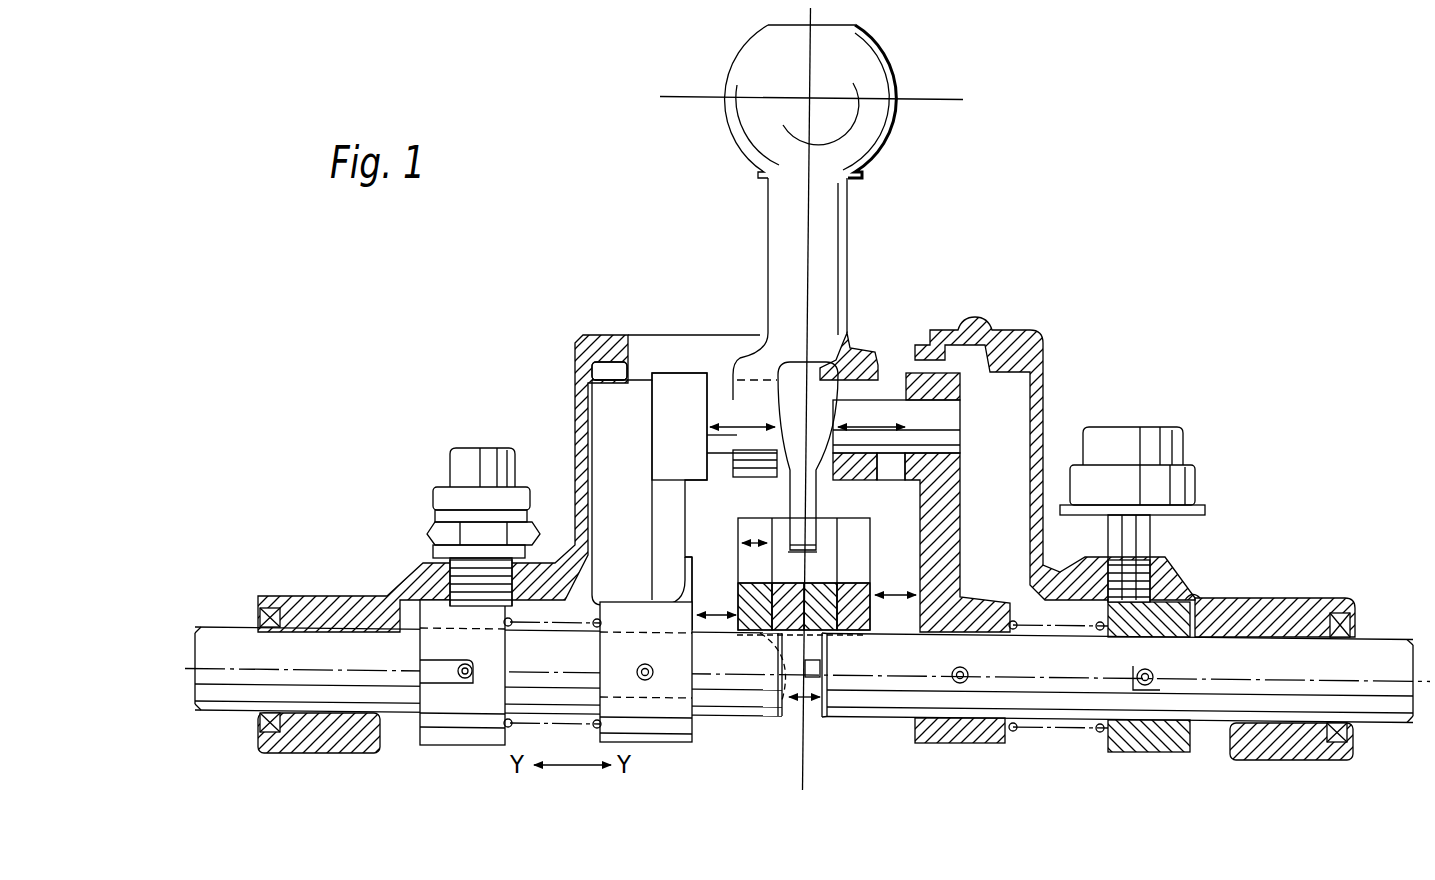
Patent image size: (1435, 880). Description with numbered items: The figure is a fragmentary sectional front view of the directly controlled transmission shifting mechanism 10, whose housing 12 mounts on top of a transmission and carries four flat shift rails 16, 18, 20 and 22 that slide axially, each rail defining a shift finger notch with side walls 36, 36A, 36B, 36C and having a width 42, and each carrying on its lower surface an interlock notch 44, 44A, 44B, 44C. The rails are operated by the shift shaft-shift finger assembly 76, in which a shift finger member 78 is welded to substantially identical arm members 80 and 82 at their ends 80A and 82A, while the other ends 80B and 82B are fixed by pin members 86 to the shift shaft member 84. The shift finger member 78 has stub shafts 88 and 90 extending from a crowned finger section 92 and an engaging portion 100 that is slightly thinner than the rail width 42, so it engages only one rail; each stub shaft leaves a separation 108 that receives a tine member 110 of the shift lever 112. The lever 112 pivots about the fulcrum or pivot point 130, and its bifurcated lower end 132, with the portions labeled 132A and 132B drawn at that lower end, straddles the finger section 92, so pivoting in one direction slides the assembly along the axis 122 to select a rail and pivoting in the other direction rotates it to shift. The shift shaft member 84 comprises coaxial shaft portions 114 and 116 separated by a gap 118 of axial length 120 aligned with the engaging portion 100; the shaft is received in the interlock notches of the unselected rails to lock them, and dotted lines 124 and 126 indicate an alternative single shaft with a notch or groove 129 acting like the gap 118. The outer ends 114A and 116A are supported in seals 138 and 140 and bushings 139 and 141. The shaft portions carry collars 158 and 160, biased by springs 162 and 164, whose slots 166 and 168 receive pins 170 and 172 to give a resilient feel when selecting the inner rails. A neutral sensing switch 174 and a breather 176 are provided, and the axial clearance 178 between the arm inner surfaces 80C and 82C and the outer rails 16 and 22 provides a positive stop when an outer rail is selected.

The transmission shifting mechanism 10 is at (458, 385).
The housing 12 is at (305, 598).
The reverse speed shift rail 16 is at (747, 636).
The first and second speed shift rail 18 is at (785, 530).
The third and fourth speed shift rail 20 is at (820, 528).
The fifth and sixth speed shift rail 22 is at (857, 532).
The side wall of shift finger notch 36 is at (857, 552).
The side wall of shift finger notch 36A is at (827, 569).
The side wall of shift finger notch 36B is at (787, 566).
The side wall of shift finger notch 36C is at (760, 530).
The width of shift rail 42 is at (745, 544).
The interlock notch 44 is at (866, 640).
The interlock notch 44A is at (833, 707).
The interlock notch 44B is at (780, 700).
The interlock notch 44C is at (767, 683).
The shift shaft-shift finger assembly 76 is at (1005, 752).
The shift finger member 78 is at (720, 393).
The arm member 80 is at (667, 520).
The end of arm member 80A is at (657, 400).
The end of arm member 80B is at (670, 733).
The axially inner surface of arm member 80C is at (688, 597).
The arm member 82 is at (947, 528).
The end of arm member 82A is at (975, 335).
The end of arm member 82B is at (957, 730).
The axially inner surface of arm member 82C is at (920, 622).
The shift shaft member 84 is at (1062, 724).
The pin member 86 is at (645, 668).
The stub shaft 88 is at (673, 406).
The stub shaft 90 is at (935, 423).
The finger section 92 is at (817, 400).
The engaging portion 100 is at (840, 472).
The separation 108 is at (720, 412).
The tine member 110 is at (740, 472).
The shift lever 112 is at (778, 202).
The shift shaft portion 114 is at (543, 708).
The outer end of shift shaft portion 114A is at (270, 622).
The shift shaft portion 116 is at (1097, 703).
The outer end of shift shaft portion 116A is at (1373, 635).
The gap 118 is at (878, 692).
The axial length of gap 120 is at (807, 700).
The axis of shift shaft 122 is at (248, 640).
The dotted line 124 is at (817, 717).
The dotted line 126 is at (833, 675).
The notch or groove 129 is at (797, 640).
The fulcrum or pivot point 130 is at (812, 97).
The lower end of shift lever 132 is at (767, 343).
The lever flange 132A is at (875, 400).
The lever flange 132B is at (717, 403).
The seal 138 is at (267, 718).
The bushing 139 is at (335, 615).
The seal 140 is at (1300, 632).
The bushing 141 is at (1265, 635).
The sleeve or collar 158 is at (446, 730).
The sleeve or collar 160 is at (1177, 740).
The spring 162 is at (593, 620).
The spring 164 is at (1010, 620).
The outwardly opening slot 166 is at (445, 658).
The outwardly opening slot 168 is at (1230, 677).
The pin 170 is at (462, 680).
The pin 172 is at (1145, 669).
The neutral sensing and safety starting switch 174 is at (467, 443).
The breather 176 is at (1097, 420).
The axial clearance 178 is at (905, 598).